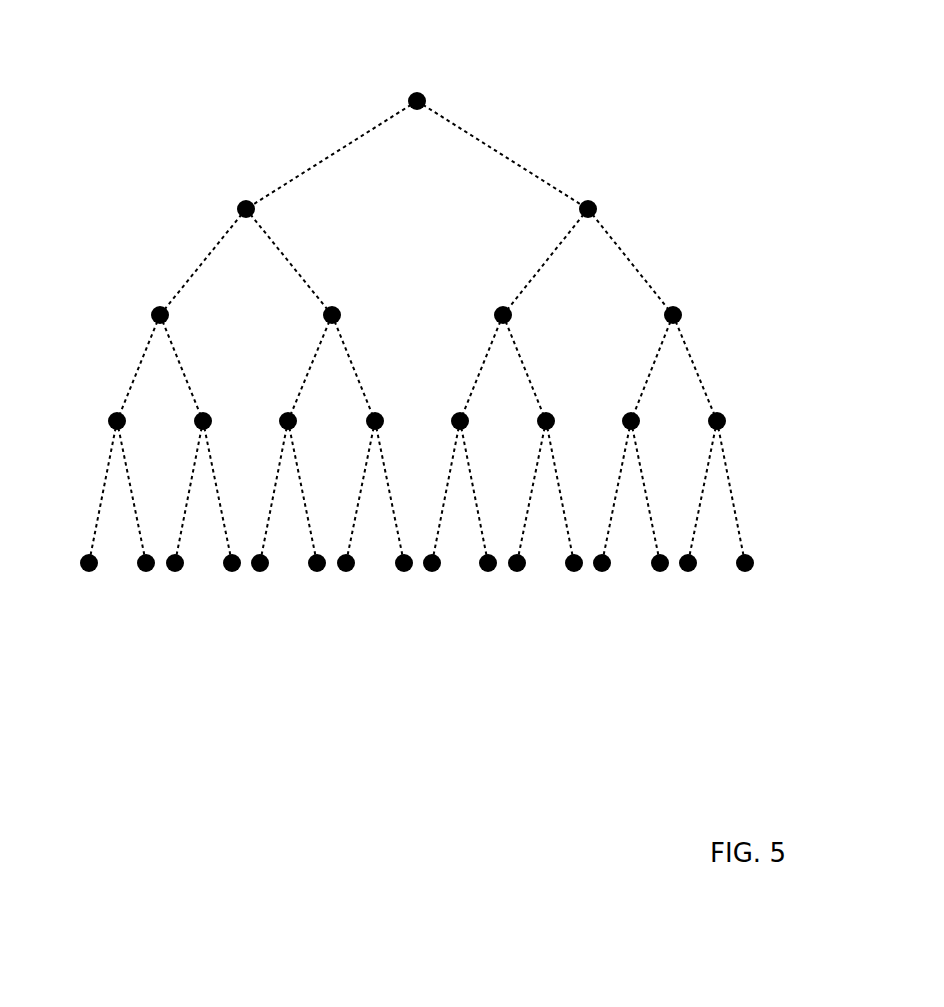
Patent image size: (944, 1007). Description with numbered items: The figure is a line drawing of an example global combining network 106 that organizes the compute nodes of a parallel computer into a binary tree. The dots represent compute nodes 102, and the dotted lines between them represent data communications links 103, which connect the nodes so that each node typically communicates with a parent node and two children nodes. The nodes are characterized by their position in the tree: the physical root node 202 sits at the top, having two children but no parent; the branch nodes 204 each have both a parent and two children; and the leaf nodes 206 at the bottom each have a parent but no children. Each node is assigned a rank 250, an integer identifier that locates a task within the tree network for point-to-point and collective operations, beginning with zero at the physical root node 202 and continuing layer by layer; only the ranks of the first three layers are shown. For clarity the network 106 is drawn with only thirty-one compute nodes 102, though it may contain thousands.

The global combining network 106 is at (213, 658).
The data communications links 103 is at (340, 150).
The rank 250 is at (553, 217).
The compute nodes 102 is at (488, 572).
The physical root node 202 is at (433, 92).
The branch nodes 204 is at (763, 160).
The leaf nodes 206 is at (763, 598).